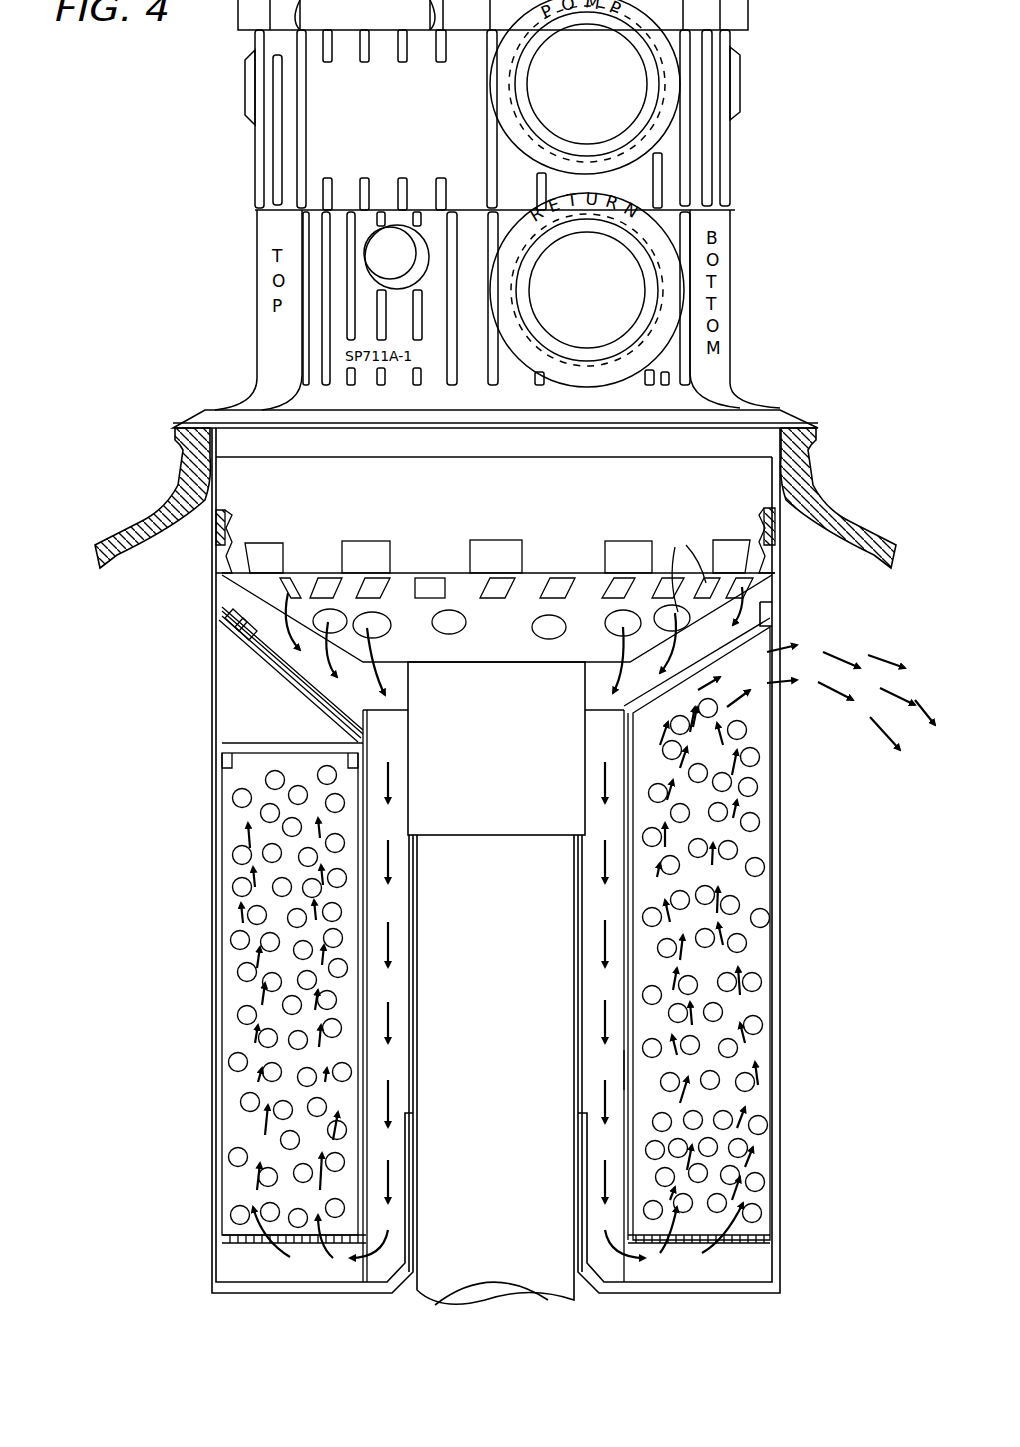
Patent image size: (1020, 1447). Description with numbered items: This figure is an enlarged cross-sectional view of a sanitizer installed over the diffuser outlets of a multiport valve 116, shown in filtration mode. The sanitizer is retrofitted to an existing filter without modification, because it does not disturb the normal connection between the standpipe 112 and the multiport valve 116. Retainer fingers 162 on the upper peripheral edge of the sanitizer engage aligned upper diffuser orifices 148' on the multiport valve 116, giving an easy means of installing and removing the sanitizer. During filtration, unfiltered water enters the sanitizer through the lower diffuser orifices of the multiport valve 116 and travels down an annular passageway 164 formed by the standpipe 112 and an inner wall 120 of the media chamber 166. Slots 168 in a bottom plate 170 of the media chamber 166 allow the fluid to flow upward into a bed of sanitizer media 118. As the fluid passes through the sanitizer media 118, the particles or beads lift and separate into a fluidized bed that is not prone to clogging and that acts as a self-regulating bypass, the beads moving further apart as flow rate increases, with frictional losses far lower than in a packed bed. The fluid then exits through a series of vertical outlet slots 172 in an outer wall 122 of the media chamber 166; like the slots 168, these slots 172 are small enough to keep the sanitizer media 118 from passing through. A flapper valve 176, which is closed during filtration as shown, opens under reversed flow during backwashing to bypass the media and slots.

The standpipe 112 is at (518, 941).
The multiport valve 116 is at (443, 512).
The sanitizer media 118 is at (247, 1015).
The inner wall 120 is at (628, 1055).
The outer wall 122 is at (778, 987).
The upper diffuser orifices 148' is at (497, 528).
The retainer fingers 162 is at (220, 525).
The annular passageway 164 is at (605, 988).
The media chamber 166 is at (762, 1103).
The slots 168 is at (237, 1244).
The bottom plate 170 is at (248, 1238).
The vertical outlet slots 172 is at (780, 632).
The flapper valve 176 is at (300, 672).